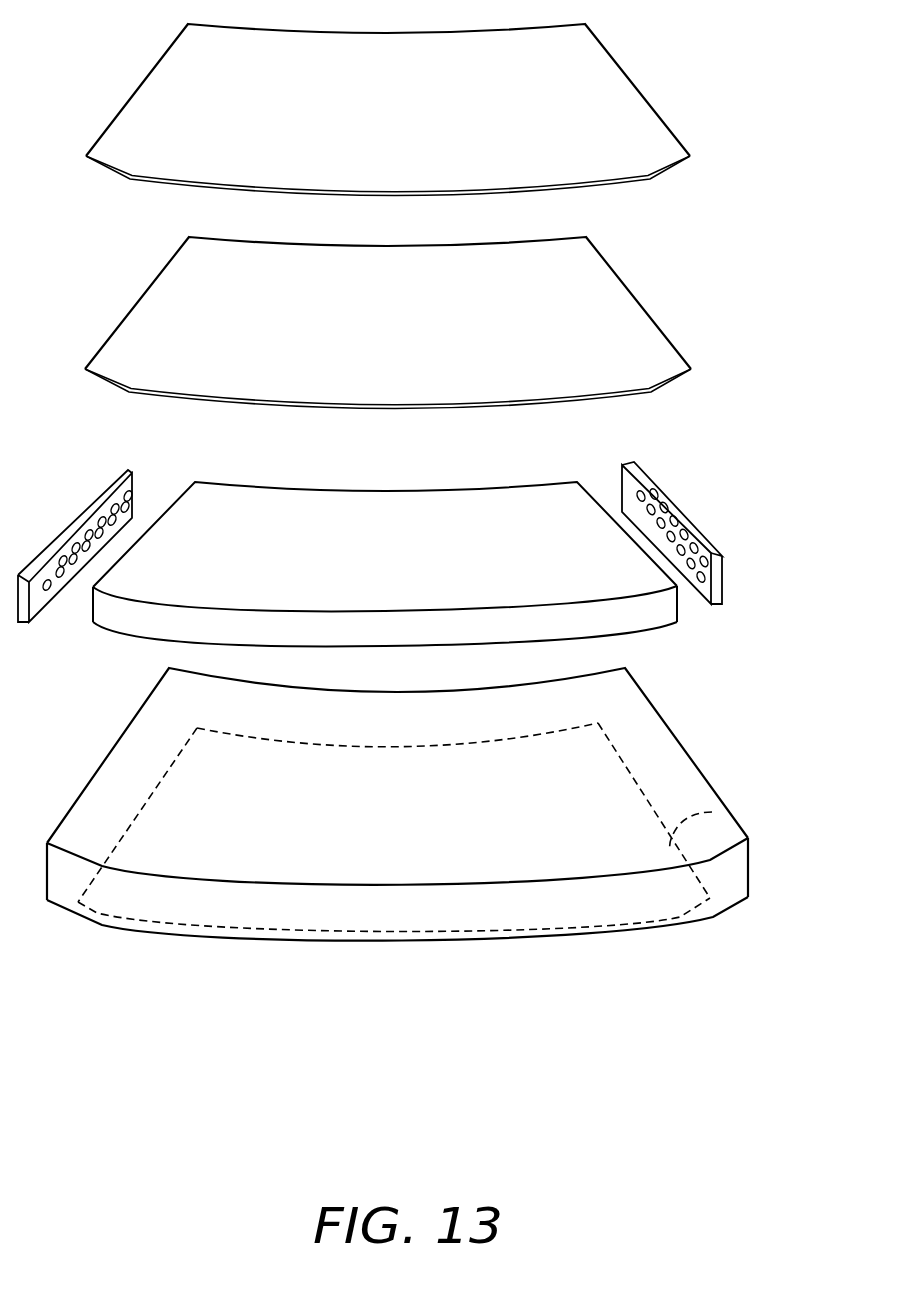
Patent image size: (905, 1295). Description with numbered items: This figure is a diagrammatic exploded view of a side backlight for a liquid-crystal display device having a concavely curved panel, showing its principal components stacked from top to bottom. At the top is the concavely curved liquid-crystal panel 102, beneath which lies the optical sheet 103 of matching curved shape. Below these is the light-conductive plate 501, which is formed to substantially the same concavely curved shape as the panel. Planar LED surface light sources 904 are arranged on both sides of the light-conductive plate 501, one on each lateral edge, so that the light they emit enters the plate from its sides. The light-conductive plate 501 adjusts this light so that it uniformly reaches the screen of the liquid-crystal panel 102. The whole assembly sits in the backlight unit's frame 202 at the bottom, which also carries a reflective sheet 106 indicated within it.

The liquid-crystal panel 102 is at (648, 133).
The optical sheet 103 is at (646, 321).
The light-conductive plate 501 is at (352, 511).
The LED surface light source 904 is at (679, 518).
The backlight unit's frame 202 is at (653, 742).
The reflective sheet 106 is at (731, 795).